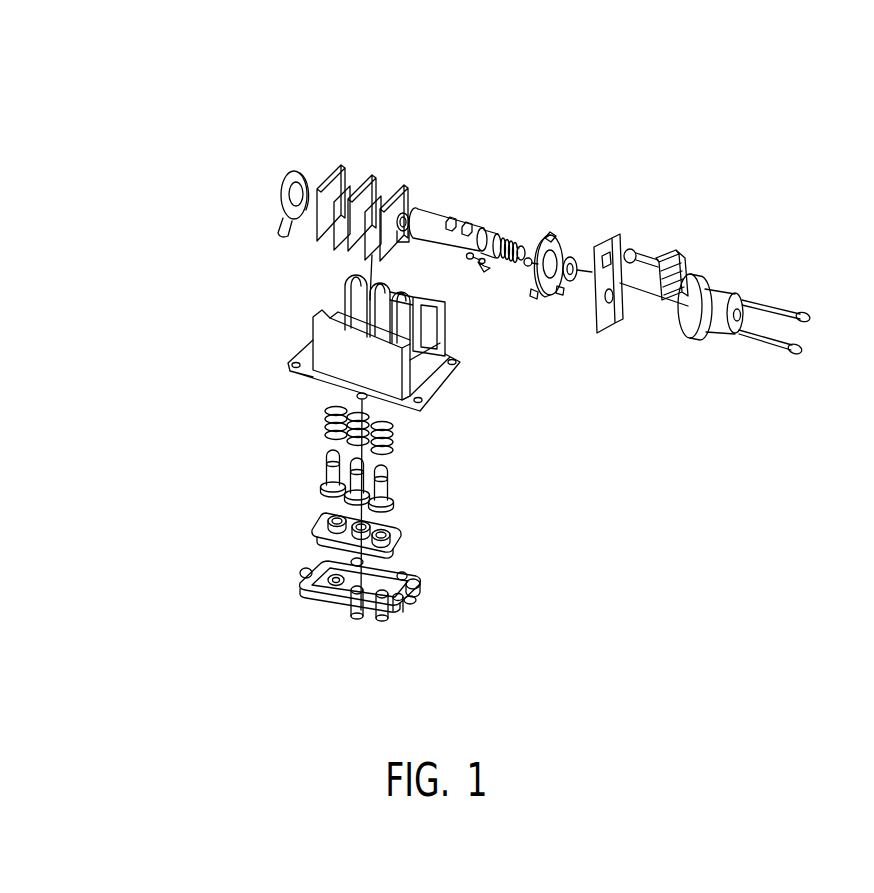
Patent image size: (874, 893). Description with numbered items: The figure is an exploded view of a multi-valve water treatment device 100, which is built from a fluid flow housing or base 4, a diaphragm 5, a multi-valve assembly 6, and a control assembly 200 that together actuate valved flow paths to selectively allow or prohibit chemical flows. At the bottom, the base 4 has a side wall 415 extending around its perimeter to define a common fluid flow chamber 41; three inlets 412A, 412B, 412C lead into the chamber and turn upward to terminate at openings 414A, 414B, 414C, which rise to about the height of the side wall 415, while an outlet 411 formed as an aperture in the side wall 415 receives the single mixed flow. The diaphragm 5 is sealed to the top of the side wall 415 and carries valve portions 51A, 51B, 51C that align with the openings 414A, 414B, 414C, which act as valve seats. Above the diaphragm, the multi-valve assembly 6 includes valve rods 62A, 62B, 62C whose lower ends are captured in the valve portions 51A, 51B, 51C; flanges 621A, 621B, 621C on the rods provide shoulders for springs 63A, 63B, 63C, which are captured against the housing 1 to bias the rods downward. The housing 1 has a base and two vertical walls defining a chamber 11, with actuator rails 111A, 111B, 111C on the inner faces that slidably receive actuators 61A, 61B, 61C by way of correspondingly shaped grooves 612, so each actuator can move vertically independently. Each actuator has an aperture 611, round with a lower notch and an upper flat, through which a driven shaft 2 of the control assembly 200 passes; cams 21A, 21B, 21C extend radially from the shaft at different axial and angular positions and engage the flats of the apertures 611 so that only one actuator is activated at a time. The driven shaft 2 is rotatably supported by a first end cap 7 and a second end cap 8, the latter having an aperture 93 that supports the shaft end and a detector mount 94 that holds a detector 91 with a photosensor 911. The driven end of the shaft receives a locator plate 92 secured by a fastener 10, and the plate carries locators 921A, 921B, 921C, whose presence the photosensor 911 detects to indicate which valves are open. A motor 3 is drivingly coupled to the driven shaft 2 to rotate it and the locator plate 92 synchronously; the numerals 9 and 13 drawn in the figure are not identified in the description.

The water treatment device 100 is at (146, 93).
The control assembly 200 is at (802, 247).
The housing 1 is at (236, 321).
The chamber 11 is at (420, 353).
The actuator rail 111A is at (282, 273).
The actuator rail 111B is at (432, 281).
The actuator rail 111C is at (438, 314).
The driven shaft 2 is at (458, 218).
The cam 21A is at (448, 219).
The cam 21B is at (478, 222).
The cam 21C is at (503, 264).
The return spring 13 is at (497, 210).
The motor 3 is at (707, 275).
The base 4 is at (200, 580).
The fluid flow chamber 41 is at (418, 591).
The outlet 411 is at (412, 616).
The inlet 412A is at (254, 557).
The inlet 412B is at (362, 566).
The inlet 412C is at (407, 575).
The opening 414A is at (288, 632).
The opening 414B is at (380, 618).
The opening 414C is at (372, 610).
The side wall 415 is at (340, 597).
The diaphragm 5 is at (207, 517).
The valve portion 51A is at (265, 500).
The valve portion 51B is at (407, 530).
The valve portion 51C is at (400, 547).
The multi-valve assembly 6 is at (208, 183).
The actuator 61A is at (256, 207).
The actuator 61B is at (318, 136).
The actuator 61C is at (412, 188).
The aperture 611 is at (402, 192).
The groove 612 is at (357, 143).
The valve rod 62A is at (237, 467).
The valve rod 62B is at (434, 462).
The valve rod 62C is at (425, 481).
The flange 621A is at (322, 487).
The flange 621B is at (368, 450).
The flange 621C is at (389, 477).
The spring 63A is at (252, 413).
The spring 63B is at (258, 377).
The spring 63C is at (394, 432).
The first end cap 7 is at (248, 163).
The second end cap 8 is at (607, 238).
The aperture 93 is at (615, 291).
The detector mount 94 is at (618, 243).
The actuating unit 9 is at (600, 75).
The detector 91 is at (661, 257).
The photosensor 911 is at (678, 262).
The locator plate 92 is at (561, 234).
The locator 921A is at (522, 178).
The locator 921B is at (549, 232).
The locator 921C is at (533, 265).
The fastener 10 is at (567, 282).